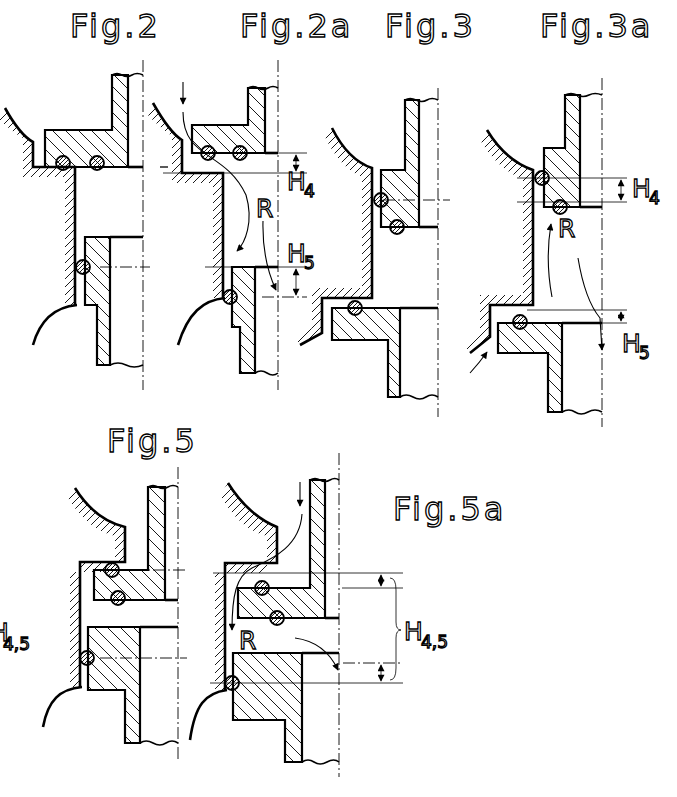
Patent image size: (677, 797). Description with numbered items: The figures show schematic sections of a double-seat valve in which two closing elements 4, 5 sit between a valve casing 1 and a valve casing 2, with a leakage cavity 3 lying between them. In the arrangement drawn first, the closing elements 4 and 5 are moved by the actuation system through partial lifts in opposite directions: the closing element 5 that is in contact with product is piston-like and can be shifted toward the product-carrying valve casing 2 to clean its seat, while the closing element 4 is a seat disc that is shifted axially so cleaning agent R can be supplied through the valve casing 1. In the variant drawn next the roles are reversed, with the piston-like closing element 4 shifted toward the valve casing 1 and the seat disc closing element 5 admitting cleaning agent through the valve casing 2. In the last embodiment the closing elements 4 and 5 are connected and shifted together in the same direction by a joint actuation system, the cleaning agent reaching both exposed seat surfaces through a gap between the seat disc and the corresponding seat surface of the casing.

In FIG. 2, the valve casing 1 is at (28, 114).
In FIG. 3, the valve casing 1 is at (360, 139).
In FIG. 5, the valve casing 1 is at (110, 511).
In FIG. 2, the valve casing 2 is at (58, 329).
In FIG. 3, the valve casing 2 is at (321, 376).
In FIG. 5, the valve casing 2 is at (63, 710).
In FIG. 2, the leakage cavity 3 is at (118, 214).
In FIG. 3, the leakage cavity 3 is at (412, 284).
In FIG. 5, the leakage cavity 3 is at (127, 619).
In FIG. 2, the closing element 4 is at (72, 140).
In FIG. 3, the closing element 4 is at (397, 178).
In FIG. 5, the closing element 4 is at (100, 583).
In FIG. 2, the closing element 5 is at (95, 293).
In FIG. 3, the closing element 5 is at (380, 332).
In FIG. 5, the closing element 5 is at (110, 677).